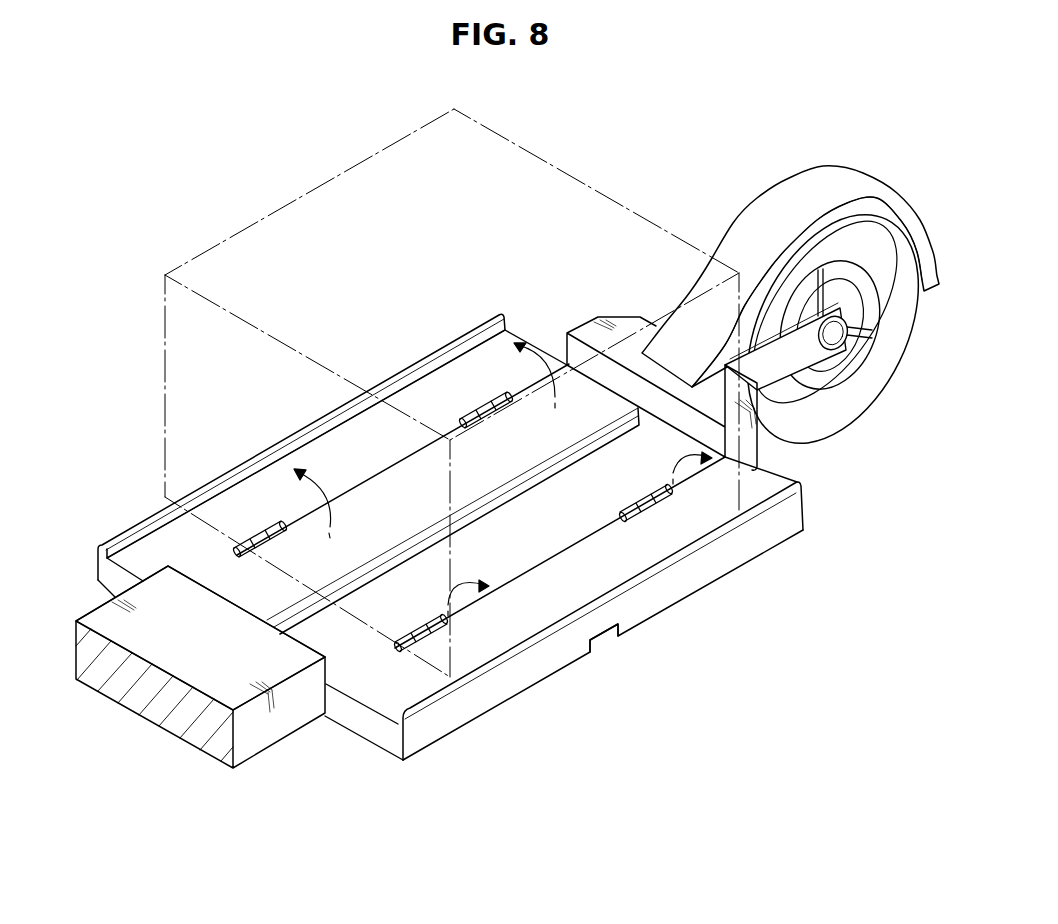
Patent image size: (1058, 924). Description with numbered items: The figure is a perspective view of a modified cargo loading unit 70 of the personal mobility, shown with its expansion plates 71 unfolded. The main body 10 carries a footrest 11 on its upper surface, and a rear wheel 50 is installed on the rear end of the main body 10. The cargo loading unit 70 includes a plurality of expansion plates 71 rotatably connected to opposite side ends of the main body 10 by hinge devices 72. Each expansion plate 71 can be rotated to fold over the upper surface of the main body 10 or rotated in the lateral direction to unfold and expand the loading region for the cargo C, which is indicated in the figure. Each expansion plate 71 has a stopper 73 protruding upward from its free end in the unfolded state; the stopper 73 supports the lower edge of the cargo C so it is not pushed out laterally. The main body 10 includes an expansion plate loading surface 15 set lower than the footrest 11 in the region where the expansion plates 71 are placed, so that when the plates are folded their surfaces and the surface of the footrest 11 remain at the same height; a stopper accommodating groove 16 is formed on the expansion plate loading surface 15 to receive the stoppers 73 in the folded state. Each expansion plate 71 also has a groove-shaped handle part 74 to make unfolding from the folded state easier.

The main body 10 is at (262, 760).
The footrest 11 is at (103, 613).
The expansion plate loading surface 15 is at (413, 573).
The stopper accommodating groove 16 is at (352, 580).
The rear wheel 50 is at (873, 367).
The cargo loading unit 70 is at (583, 360).
The expansion plate 71 is at (265, 488).
The hinge device 72 is at (260, 542).
The stopper 73 is at (410, 367).
The handle part 74 is at (610, 634).
The cargo C is at (530, 147).